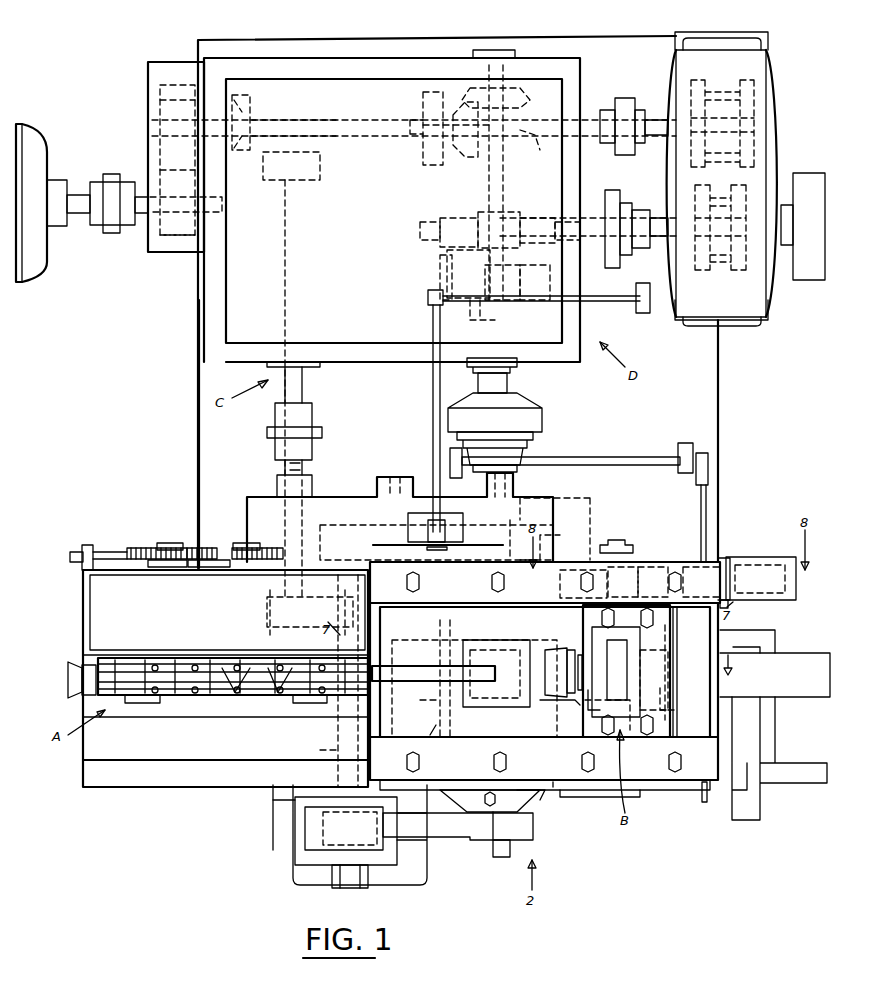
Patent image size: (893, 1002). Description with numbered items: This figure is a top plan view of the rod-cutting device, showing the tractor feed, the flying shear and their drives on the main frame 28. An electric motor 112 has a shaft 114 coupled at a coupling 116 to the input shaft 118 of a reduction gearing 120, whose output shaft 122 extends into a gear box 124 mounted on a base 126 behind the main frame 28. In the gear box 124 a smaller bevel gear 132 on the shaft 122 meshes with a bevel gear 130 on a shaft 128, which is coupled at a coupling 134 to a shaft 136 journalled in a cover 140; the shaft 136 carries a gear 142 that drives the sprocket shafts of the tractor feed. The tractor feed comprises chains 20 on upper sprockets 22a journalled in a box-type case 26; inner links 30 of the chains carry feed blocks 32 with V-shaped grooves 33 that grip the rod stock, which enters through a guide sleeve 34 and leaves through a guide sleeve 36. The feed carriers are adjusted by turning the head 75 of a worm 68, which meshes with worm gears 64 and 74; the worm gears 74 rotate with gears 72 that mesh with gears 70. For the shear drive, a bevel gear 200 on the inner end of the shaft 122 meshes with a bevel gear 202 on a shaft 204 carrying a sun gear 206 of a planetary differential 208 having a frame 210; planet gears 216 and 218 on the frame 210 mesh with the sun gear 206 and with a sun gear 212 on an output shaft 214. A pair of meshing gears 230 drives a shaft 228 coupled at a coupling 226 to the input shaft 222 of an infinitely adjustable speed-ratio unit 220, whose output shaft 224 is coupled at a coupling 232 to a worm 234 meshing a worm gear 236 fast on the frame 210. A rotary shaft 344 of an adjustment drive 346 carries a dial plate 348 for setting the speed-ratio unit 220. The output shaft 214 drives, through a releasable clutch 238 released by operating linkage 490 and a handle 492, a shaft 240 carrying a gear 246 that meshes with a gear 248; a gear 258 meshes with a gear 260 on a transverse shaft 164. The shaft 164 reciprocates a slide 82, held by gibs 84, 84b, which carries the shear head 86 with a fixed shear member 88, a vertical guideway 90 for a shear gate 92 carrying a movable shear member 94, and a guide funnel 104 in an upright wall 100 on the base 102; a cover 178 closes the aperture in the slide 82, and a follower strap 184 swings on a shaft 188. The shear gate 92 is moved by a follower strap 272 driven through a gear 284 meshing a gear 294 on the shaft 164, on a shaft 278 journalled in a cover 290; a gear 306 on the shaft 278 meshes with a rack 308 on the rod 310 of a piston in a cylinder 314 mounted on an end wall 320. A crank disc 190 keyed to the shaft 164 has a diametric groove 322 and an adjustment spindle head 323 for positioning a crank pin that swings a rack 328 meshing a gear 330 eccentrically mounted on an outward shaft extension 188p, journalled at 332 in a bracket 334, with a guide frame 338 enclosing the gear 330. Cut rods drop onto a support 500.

The gear box 124 is at (290, 60).
The base 126 is at (212, 375).
The speed-ratio unit 220 is at (780, 75).
The output shaft 122 is at (270, 122).
The coupling 226 is at (620, 98).
The input shaft 222 is at (650, 120).
The coupling 232 is at (610, 190).
The output shaft 224 is at (650, 218).
The electric motor 112 is at (32, 138).
The motor shaft 114 is at (78, 195).
The coupling 116 is at (110, 232).
The input shaft 118 is at (140, 215).
The reduction gearing 120 is at (165, 170).
The smaller bevel gear 132 is at (236, 106).
The bevel gear 130 is at (330, 165).
The shaft 128 is at (300, 245).
The shaft 204 is at (505, 172).
The meshing gears 230 is at (425, 108).
The bevel gear 200 is at (472, 160).
The bevel gear 202 is at (522, 104).
The shaft 228 is at (536, 141).
The sun gear 206 is at (480, 255).
The worm gear 236 is at (445, 225).
The worm 234 is at (535, 218).
The planetary differential 208 is at (445, 258).
The planet gears 216 is at (442, 270).
The sun gear 212 is at (520, 300).
The planet gears 218 is at (560, 278).
The adjustment drive 346 is at (470, 305).
The frame 210 is at (428, 315).
The rotary shaft 344 is at (432, 438).
The coupling 134 is at (314, 425).
The shaft 136 is at (304, 467).
The output shaft 214 is at (520, 362).
The releasable clutch 238 is at (545, 415).
The operating linkage 490 is at (660, 458).
The cover 140 is at (345, 498).
The gear 248 is at (340, 530).
The dial plate 348 is at (490, 540).
The shaft 240 is at (505, 515).
The gear 246 is at (530, 520).
The gear 260 is at (560, 598).
The gear 306 is at (600, 565).
The gibs 84 is at (565, 575).
The rotary shaft 278 is at (630, 570).
The cover 290 is at (655, 570).
The rack 308 is at (680, 560).
The rod 310 is at (720, 560).
The cylinder 314 is at (765, 557).
The end wall 320 is at (730, 605).
The slide 82 is at (560, 725).
The transverse shaft 164 is at (490, 762).
The guide sleeve 36 is at (440, 665).
The gear 258 is at (410, 654).
The cover 178 is at (478, 640).
The follower strap 184 is at (410, 690).
The guide funnel 104 is at (550, 660).
The upright wall 100 is at (568, 652).
The vertical guideway 90 is at (580, 655).
The shear gate 92 is at (620, 650).
The movable shear member 94 is at (660, 643).
The follower strap 272 is at (668, 655).
The gear 284 is at (672, 700).
The base 102 is at (560, 700).
The shear head 86 is at (593, 705).
The fixed shear member 88 is at (598, 712).
The gear 294 is at (430, 738).
The case 26 is at (80, 610).
The gear 142 is at (266, 612).
The chains 20 is at (193, 702).
The guide sleeve 34 is at (68, 682).
The inner links 30 is at (90, 668).
The upper sprockets 22a is at (145, 703).
The feed blocks 32 is at (237, 695).
The V-shaped grooves 33 is at (278, 695).
The shaft 188 is at (320, 750).
The head 75 is at (72, 552).
The worm gears 74 is at (140, 548).
The worm 68 is at (203, 548).
The worm gear 64 is at (228, 548).
The gears 72 is at (165, 568).
The gears 70 is at (212, 568).
The rack 328 is at (440, 835).
The diametric groove 322 is at (470, 800).
The head 323 is at (495, 826).
The crank disc 190 is at (532, 795).
The main frame 28 is at (560, 800).
The gear 330 is at (320, 828).
The guide frame 338 is at (305, 850).
The journal 332 is at (348, 880).
The bracket 334 is at (400, 880).
The shaft extension 188p is at (345, 797).
The rod support 500 is at (800, 660).
The handle 492 is at (705, 802).
The gib 84b is at (600, 792).